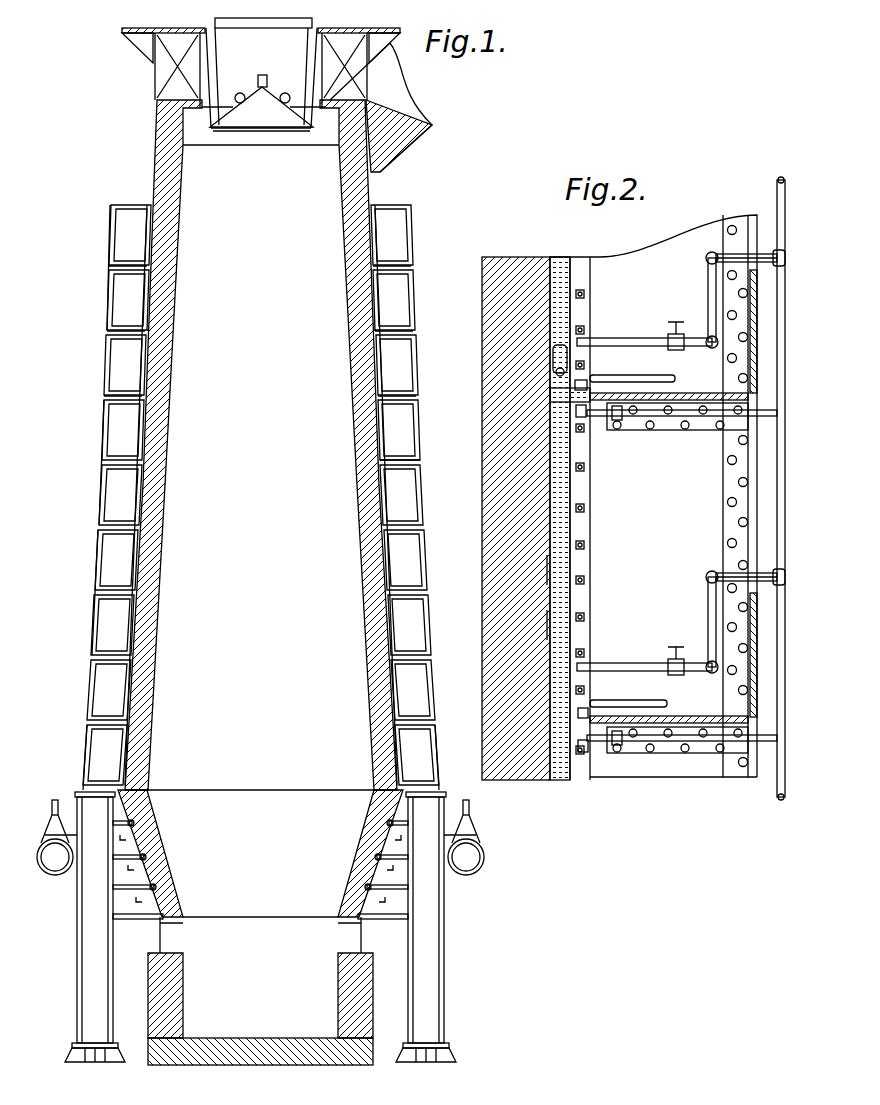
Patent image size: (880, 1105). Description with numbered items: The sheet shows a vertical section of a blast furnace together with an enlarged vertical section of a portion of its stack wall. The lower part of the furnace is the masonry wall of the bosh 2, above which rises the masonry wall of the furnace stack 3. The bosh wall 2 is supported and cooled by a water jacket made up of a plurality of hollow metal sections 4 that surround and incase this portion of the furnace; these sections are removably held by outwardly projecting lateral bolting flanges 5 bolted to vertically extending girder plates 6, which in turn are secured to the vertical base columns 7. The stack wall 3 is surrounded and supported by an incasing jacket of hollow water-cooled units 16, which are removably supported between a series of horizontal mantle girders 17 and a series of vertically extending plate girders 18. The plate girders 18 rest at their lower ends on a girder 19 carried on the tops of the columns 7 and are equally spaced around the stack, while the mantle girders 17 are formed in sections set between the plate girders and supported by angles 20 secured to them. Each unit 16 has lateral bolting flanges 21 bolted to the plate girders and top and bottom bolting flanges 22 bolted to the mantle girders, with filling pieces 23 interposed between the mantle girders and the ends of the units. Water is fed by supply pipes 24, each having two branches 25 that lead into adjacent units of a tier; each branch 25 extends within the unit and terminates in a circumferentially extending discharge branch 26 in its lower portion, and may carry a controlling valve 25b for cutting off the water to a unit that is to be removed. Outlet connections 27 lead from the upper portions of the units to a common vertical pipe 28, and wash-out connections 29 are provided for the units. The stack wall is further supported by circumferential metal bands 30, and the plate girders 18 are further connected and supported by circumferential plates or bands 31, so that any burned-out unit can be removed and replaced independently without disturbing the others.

In FIG. 1, the masonry wall of the bosh 2 is at (168, 861).
In FIG. 1, the masonry wall of the furnace stack 3 is at (165, 449).
In FIG. 1, the hollow metal sections 4 is at (125, 812).
In FIG. 1, the lateral bolting flanges 5 is at (128, 846).
In FIG. 1, the girder plates 6 is at (131, 919).
In FIG. 1, the base columns 7 is at (82, 945).
In FIG. 1, the hollow water-cooled units 16 is at (150, 500).
In FIG. 2, the hollow water-cooled units 16 is at (583, 306).
In FIG. 1, the mantle girders 17 is at (116, 538).
In FIG. 2, the mantle girders 17 is at (690, 717).
In FIG. 1, the plate girders 18 is at (110, 620).
In FIG. 2, the plate girders 18 is at (680, 796).
In FIG. 1, the girder 19 is at (85, 792).
In FIG. 1, the angles 20 is at (400, 482).
In FIG. 2, the angles 20 is at (666, 432).
In FIG. 2, the lateral bolting flanges 21 is at (590, 521).
In FIG. 2, the top and bottom bolting flanges 22 is at (590, 420).
In FIG. 2, the filling pieces 23 is at (590, 390).
In FIG. 2, the supply pipes 24 is at (785, 223).
In FIG. 2, the branches 25 is at (660, 666).
In FIG. 2, the controlling valves 25b is at (681, 659).
In FIG. 2, the discharge branch 26 is at (555, 372).
In FIG. 2, the outlet connections 27 is at (780, 411).
In FIG. 2, the common vertical pipe 28 is at (785, 373).
In FIG. 2, the wash-out connections 29 is at (660, 379).
In FIG. 1, the circumferential metal bands 30 is at (369, 388).
In FIG. 2, the circumferential metal bands 30 is at (550, 402).
In FIG. 1, the circumferential plates or bands 31 is at (100, 586).
In FIG. 2, the circumferential plates or bands 31 is at (758, 336).